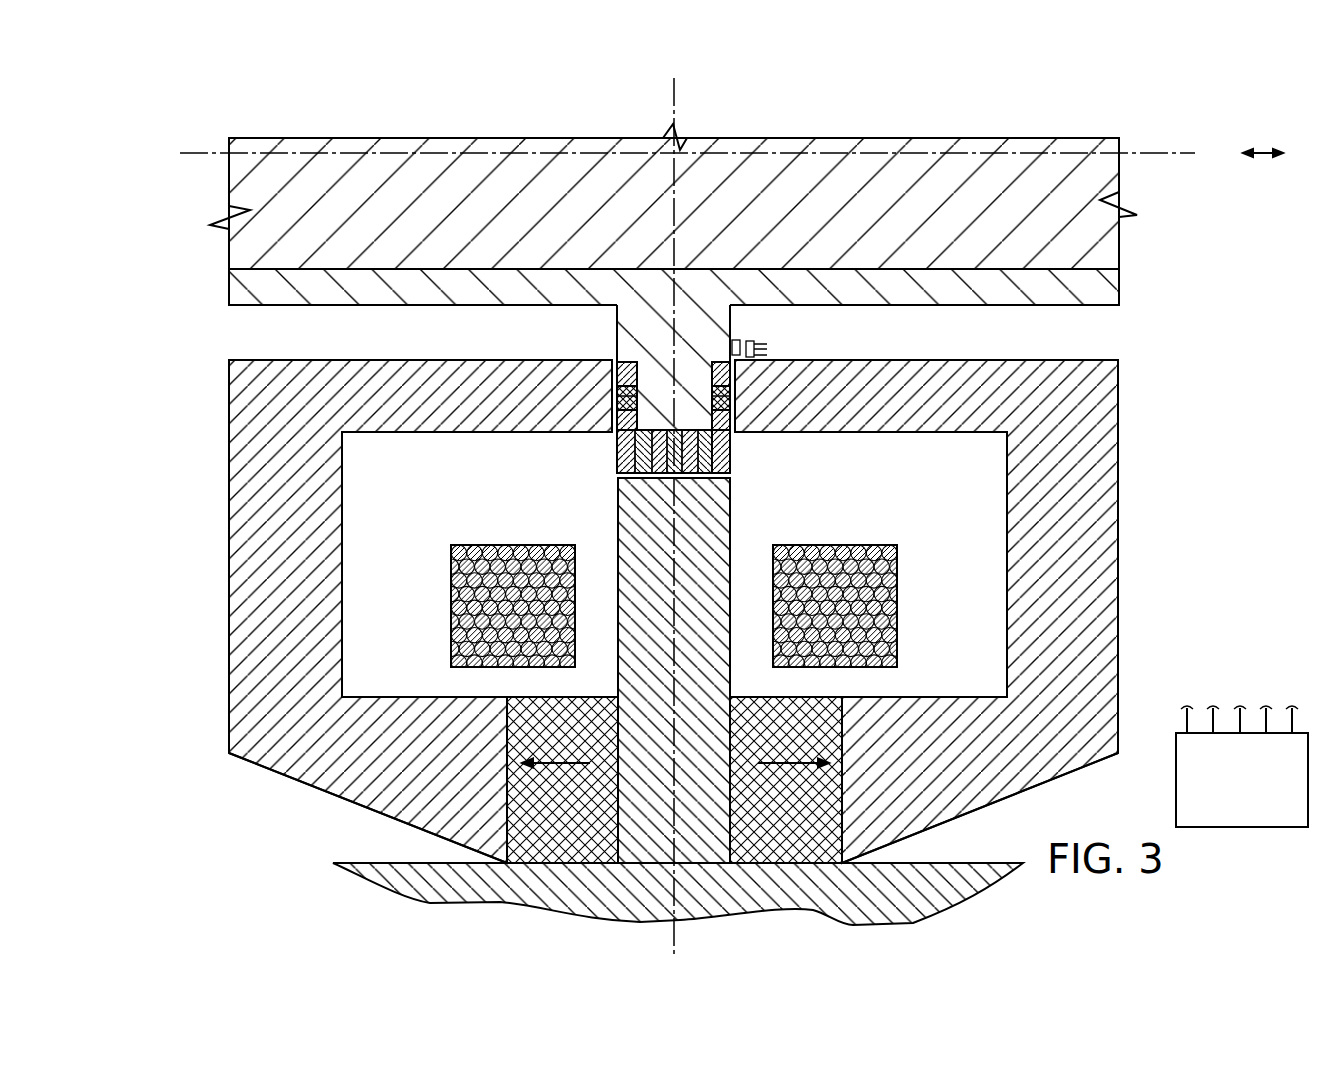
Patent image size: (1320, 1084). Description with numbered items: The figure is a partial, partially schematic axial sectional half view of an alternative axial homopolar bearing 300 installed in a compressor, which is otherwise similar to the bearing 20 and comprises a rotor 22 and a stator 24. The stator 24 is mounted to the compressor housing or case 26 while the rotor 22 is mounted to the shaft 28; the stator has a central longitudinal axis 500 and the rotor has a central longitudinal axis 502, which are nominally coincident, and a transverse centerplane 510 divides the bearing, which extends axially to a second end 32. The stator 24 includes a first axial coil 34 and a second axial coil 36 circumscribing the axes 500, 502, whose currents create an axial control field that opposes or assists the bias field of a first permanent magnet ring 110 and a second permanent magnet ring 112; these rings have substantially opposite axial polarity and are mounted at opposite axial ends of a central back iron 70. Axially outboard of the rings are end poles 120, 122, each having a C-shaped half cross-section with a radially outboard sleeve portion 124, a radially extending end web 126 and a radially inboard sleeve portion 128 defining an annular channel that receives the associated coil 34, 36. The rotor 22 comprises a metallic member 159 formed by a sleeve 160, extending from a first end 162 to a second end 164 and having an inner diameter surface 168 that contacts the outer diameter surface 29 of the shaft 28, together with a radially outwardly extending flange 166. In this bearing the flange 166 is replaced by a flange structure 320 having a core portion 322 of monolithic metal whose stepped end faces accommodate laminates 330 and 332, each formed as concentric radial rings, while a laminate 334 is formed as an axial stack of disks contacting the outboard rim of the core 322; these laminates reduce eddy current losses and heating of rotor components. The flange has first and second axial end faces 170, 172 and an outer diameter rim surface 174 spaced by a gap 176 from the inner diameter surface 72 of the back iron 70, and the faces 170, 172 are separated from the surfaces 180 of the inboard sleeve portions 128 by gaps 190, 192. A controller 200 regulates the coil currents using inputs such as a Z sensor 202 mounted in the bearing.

The axial homopolar bearing 20 is at (140, 590).
The rotor 22 is at (160, 255).
The stator 24 is at (211, 772).
The housing or case 26 is at (372, 877).
The shaft 28 is at (186, 194).
The outer diameter surface 29 is at (455, 296).
The second end 32 is at (1156, 377).
The first axial coil 34 is at (478, 548).
The second axial coil 36 is at (890, 548).
The central back iron 70 is at (652, 838).
The inner diameter surface 72 is at (650, 455).
The first permanent magnet ring 110 is at (520, 818).
The second permanent magnet ring 112 is at (795, 832).
The end pole 120 is at (270, 590).
The end pole 122 is at (1082, 569).
The radially outboard sleeve portion 124 is at (990, 775).
The radially extending end web 126 is at (1085, 490).
The radially inboard sleeve portion 128 is at (955, 362).
The metallic member 159 is at (858, 272).
The sleeve 160 is at (990, 288).
The first end 162 is at (230, 290).
The second end 164 is at (1120, 283).
The flange 166 is at (800, 278).
The inner diameter surface 168 is at (1068, 267).
The first axial end face 170 is at (609, 353).
The second axial end face 172 is at (733, 323).
The outer diameter rim surface 174 is at (700, 486).
The gap 176 is at (740, 444).
The surfaces of inboard sleeve portions 180 is at (648, 364).
The gap 190 is at (612, 370).
The gap 192 is at (745, 471).
The controller 200 is at (1258, 790).
The Z sensor 202 is at (788, 348).
The alternative bearing 300 is at (170, 465).
The flange structure 320 is at (705, 332).
The core portion 322 is at (686, 340).
The laminate 330 is at (622, 382).
The laminate 332 is at (735, 393).
The laminate 334 is at (702, 492).
The central longitudinal axis 500 is at (1165, 152).
The central longitudinal axis 502 is at (1259, 154).
The transverse centerplane 510 is at (676, 97).